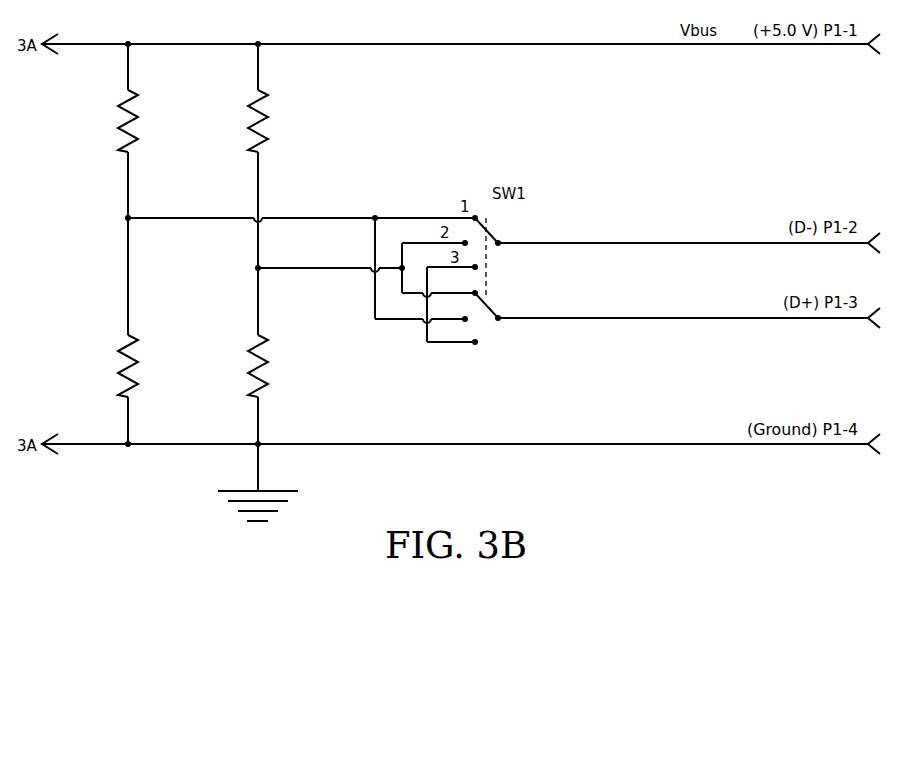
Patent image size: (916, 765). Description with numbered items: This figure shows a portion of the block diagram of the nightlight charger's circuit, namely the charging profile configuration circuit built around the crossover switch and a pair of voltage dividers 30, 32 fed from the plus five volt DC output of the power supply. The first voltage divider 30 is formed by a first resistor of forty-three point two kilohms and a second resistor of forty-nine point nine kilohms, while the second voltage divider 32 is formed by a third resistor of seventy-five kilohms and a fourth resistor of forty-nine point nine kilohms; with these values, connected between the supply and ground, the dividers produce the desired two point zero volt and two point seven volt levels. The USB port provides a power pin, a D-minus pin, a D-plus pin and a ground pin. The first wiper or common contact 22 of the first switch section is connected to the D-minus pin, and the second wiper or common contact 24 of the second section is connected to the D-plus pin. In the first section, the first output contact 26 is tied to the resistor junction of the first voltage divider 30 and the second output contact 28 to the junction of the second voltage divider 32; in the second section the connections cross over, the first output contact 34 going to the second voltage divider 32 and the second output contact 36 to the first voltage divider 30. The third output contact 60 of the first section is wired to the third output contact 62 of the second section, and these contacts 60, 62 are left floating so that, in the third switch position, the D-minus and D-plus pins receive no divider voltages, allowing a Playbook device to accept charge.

The first voltage divider 30 is at (97, 165).
The second voltage divider 32 is at (323, 97).
The first output contact of the first section of the switch 26 is at (475, 216).
The second output contact of the first section of the switch 28 is at (465, 241).
The first wiper or common contact 22 is at (499, 242).
The third output contact of the first section of the switch 60 is at (477, 267).
The first output contact of the second section of the switch 34 is at (477, 293).
The second wiper or common contact 24 is at (499, 317).
The second output contact of the second section of the switch 36 is at (467, 319).
The third output contact of the second section of the switch 62 is at (475, 344).